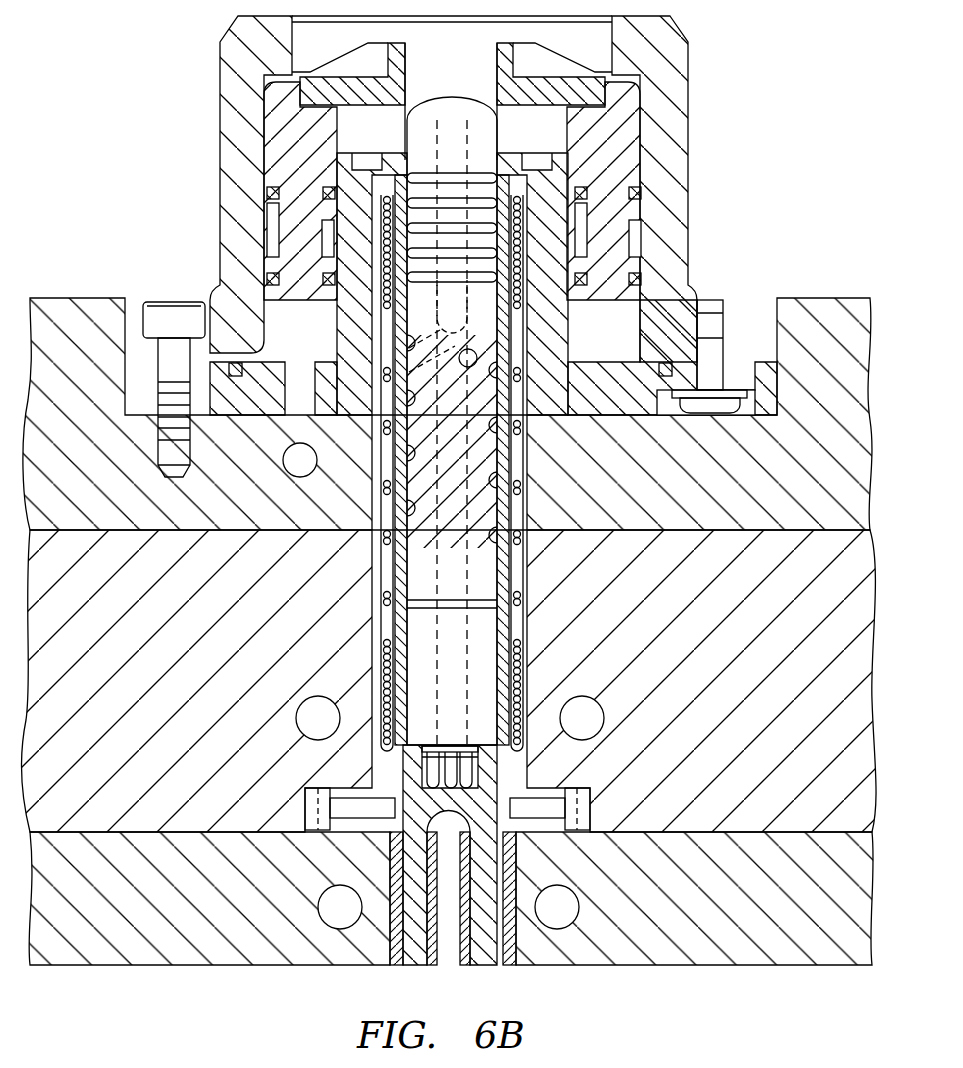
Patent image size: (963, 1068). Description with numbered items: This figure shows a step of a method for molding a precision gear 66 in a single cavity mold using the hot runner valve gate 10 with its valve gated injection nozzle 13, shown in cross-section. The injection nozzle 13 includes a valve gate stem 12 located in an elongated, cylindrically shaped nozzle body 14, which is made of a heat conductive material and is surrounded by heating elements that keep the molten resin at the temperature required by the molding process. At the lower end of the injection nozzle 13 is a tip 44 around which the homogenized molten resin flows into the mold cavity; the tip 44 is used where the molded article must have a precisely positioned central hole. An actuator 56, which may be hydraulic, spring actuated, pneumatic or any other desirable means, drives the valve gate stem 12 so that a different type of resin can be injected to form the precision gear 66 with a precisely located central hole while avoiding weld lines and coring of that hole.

The hot runner valve gate 10 is at (518, 383).
The valve gate stem 12 is at (477, 663).
The injection nozzle 13 is at (607, 336).
The nozzle body 14 is at (398, 630).
The tip 44 is at (467, 769).
The actuator 56 is at (483, 812).
The precision gear 66 is at (375, 810).